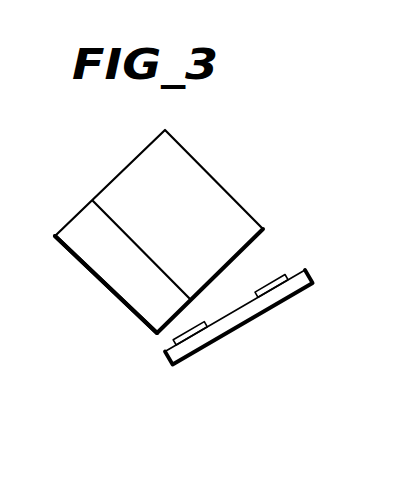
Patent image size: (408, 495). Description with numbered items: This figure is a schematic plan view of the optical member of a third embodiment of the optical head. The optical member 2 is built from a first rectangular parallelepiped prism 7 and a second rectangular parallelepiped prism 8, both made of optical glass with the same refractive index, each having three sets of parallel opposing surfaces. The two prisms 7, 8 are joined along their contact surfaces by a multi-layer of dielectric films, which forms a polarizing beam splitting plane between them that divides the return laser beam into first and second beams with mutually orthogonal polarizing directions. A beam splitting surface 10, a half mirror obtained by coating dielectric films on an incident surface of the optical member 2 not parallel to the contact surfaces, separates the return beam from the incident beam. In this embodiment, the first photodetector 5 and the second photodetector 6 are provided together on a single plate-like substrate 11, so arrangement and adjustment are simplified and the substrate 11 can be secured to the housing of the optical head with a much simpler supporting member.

The optical member 2 is at (229, 146).
The beam splitting surface 10 is at (122, 170).
The second rectangular parallelepiped prism 8 is at (213, 207).
The first rectangular parallelepiped prism 7 is at (98, 257).
The plate-like substrate 11 is at (257, 315).
The first photodetector 5 is at (175, 346).
The second photodetector 6 is at (283, 272).